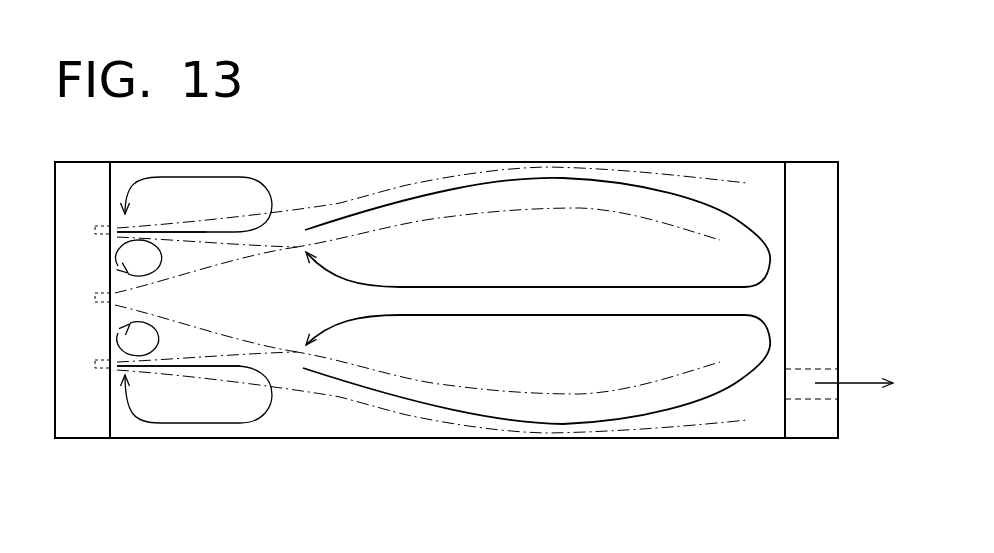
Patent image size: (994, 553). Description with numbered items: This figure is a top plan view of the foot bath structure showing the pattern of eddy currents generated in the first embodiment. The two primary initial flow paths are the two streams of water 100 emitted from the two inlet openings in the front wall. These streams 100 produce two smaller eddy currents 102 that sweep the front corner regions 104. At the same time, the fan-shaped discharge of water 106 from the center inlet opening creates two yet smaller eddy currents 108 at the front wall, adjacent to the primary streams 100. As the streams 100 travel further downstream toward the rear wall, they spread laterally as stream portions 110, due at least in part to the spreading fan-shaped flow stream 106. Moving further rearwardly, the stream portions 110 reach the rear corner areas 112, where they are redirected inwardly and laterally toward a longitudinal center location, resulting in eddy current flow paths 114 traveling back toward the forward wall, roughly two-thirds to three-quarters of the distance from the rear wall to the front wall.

The streams of water 100 is at (282, 374).
The smaller eddy currents 102 is at (192, 175).
The front corner regions 104 is at (122, 172).
The fan-shaped discharge of water 106 is at (205, 263).
The yet smaller eddy currents 108 is at (164, 262).
The stream portions 110 is at (405, 185).
The rear corner areas 112 is at (770, 178).
The eddy current flow paths 114 is at (530, 287).